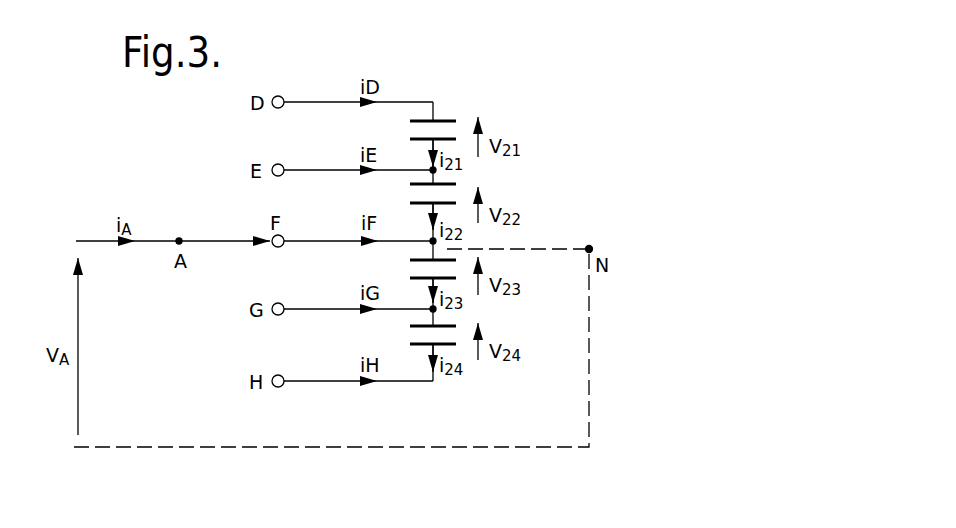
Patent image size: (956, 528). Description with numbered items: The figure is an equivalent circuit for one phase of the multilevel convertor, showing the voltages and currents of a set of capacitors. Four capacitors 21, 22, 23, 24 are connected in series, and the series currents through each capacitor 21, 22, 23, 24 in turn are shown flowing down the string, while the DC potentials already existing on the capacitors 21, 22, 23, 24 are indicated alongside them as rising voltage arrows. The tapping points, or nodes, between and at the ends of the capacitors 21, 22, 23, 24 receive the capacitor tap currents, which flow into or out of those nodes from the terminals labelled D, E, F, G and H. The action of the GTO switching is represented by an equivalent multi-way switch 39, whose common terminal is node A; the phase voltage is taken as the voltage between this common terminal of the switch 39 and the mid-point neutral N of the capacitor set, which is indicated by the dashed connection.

The capacitor 21 is at (417, 127).
The capacitor 22 is at (417, 195).
The capacitor 23 is at (418, 268).
The capacitor 24 is at (417, 333).
The equivalent multi-way switch 39 is at (207, 240).